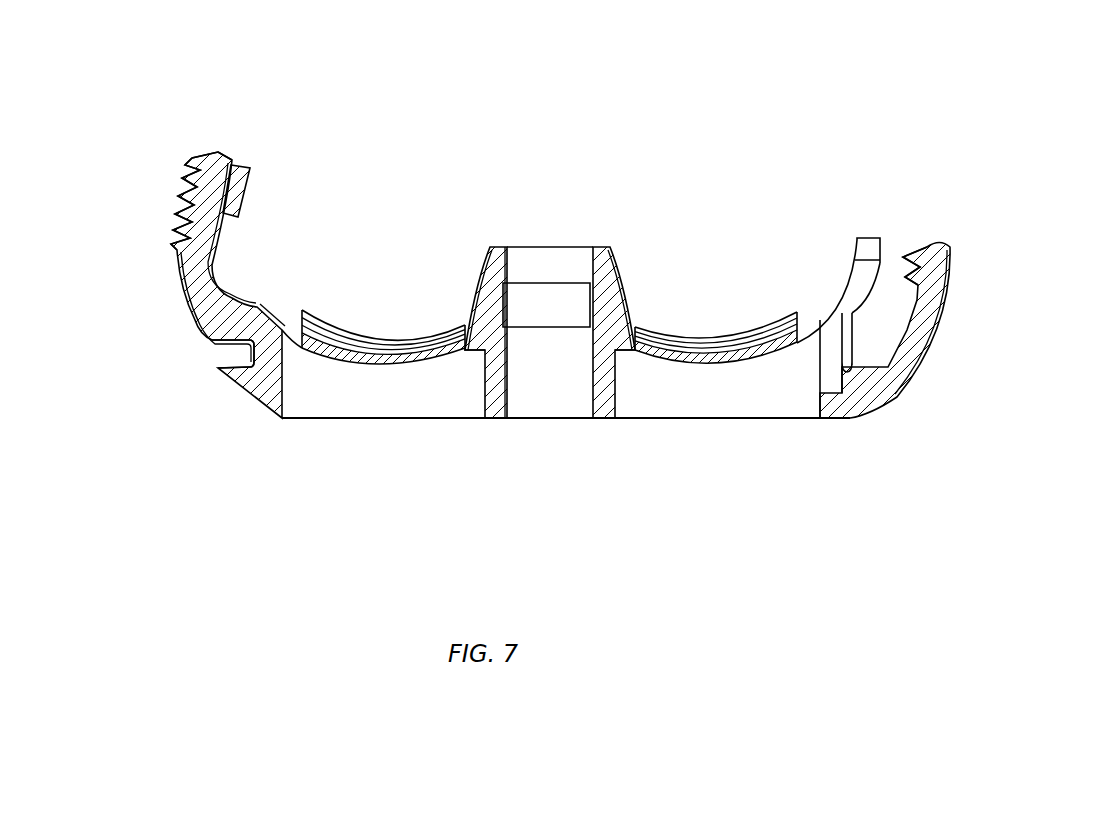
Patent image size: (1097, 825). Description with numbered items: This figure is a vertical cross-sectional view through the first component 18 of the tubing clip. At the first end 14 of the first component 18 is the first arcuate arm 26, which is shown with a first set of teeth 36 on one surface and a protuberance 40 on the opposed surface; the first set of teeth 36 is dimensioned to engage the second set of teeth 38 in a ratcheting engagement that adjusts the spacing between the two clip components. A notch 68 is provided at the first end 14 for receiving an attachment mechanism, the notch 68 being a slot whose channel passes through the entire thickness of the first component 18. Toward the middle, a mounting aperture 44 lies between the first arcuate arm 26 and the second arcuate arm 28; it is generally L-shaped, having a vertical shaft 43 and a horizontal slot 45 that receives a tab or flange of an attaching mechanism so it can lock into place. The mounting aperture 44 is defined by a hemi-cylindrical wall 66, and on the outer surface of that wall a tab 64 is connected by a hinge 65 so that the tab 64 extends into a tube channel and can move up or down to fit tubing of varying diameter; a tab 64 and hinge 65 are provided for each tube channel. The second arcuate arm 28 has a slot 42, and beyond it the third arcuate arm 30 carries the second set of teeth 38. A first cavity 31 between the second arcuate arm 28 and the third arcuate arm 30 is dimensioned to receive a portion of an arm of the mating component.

The first component 18 is at (124, 60).
The first end 14 is at (148, 237).
The first set of teeth 36 is at (178, 184).
The first arcuate arm 26 is at (207, 152).
The protuberance 40 is at (238, 172).
The notch 68 is at (230, 356).
The tab 64 is at (368, 338).
The hinge 65 is at (462, 322).
The hemi-cylindrical wall 66 is at (489, 277).
The vertical shaft 43 is at (572, 262).
The mounting aperture 44 is at (552, 240).
The horizontal slot 45 is at (529, 295).
The slot 42 is at (855, 240).
The second arcuate arm 28 is at (868, 238).
The third arcuate arm 30 is at (938, 249).
The second set of teeth 38 is at (910, 253).
The first cavity 31 is at (890, 322).